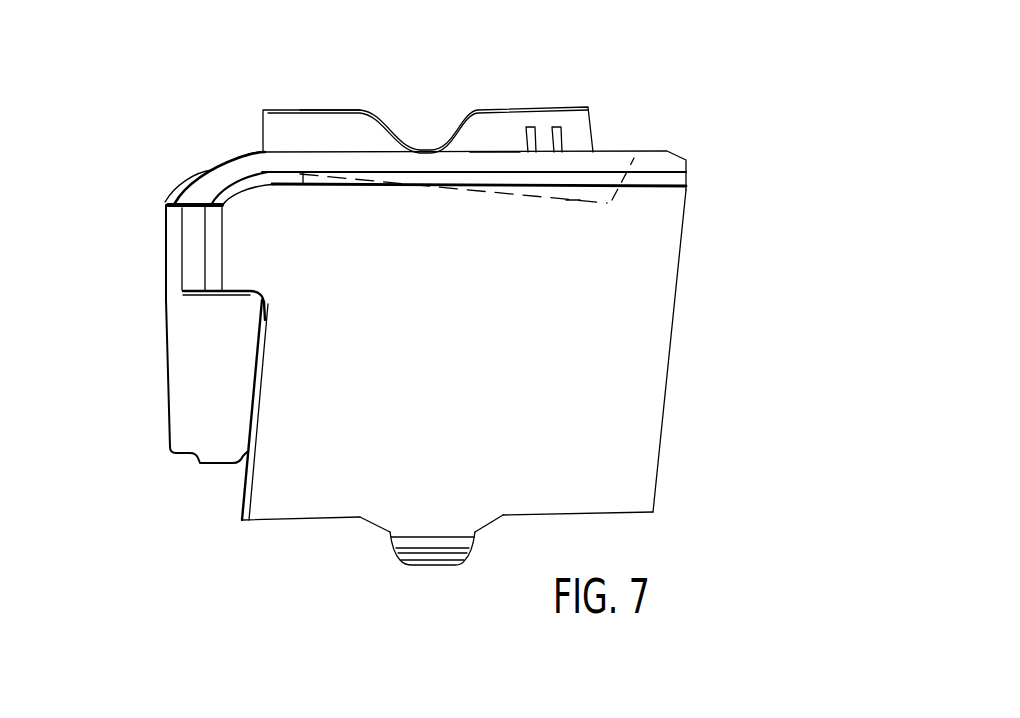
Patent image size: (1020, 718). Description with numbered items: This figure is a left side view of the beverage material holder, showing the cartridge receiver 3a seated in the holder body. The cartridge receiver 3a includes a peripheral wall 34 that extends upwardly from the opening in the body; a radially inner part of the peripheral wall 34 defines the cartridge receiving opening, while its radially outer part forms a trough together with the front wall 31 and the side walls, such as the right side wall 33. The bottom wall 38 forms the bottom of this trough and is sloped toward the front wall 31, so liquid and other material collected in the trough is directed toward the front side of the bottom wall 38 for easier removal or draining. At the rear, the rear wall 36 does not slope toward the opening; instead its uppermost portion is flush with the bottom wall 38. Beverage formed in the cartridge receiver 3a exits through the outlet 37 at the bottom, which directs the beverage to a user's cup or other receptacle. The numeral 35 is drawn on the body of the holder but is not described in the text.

The cartridge receiver 3a is at (403, 62).
The front wall 31 is at (672, 162).
The right sidewall 33 is at (487, 160).
The peripheral wall 34 is at (550, 107).
The body 35 is at (600, 420).
The rear wall 36 is at (228, 168).
The outlet 37 is at (423, 559).
The bottom wall 38 is at (572, 200).